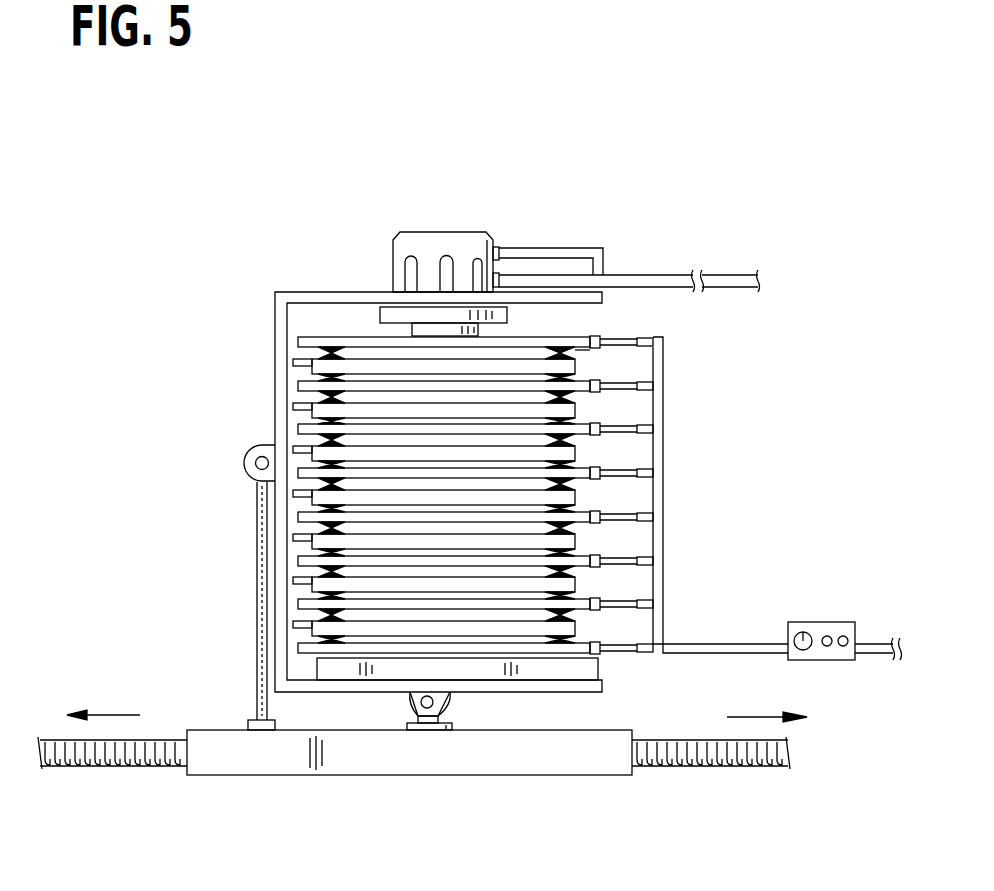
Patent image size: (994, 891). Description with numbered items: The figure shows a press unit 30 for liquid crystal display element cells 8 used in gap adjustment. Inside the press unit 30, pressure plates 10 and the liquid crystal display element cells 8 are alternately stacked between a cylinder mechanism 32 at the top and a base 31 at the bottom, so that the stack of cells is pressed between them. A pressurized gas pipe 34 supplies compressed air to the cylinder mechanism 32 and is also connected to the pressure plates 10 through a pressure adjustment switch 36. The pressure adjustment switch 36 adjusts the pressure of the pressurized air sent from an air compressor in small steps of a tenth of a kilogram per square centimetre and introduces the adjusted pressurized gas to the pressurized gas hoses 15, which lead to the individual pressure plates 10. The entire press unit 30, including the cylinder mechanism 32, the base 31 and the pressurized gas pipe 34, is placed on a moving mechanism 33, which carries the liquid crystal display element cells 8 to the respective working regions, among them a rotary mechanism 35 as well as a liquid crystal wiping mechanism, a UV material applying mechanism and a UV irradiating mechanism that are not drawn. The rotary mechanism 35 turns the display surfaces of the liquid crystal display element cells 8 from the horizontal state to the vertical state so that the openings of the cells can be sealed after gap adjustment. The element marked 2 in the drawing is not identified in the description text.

The cell unit 2 is at (570, 352).
The liquid crystal display element cell 8 is at (290, 372).
The pressure plate 10 is at (305, 342).
The pressurized gas hose 15 is at (622, 380).
The press unit 30 is at (335, 277).
The base 31 is at (550, 667).
The cylinder mechanism 32 is at (460, 250).
The moving mechanism 33 is at (183, 712).
The pressurized gas pipe 34 is at (660, 477).
The rotary mechanism 35 is at (243, 498).
The pressure adjustment switch 36 is at (822, 622).